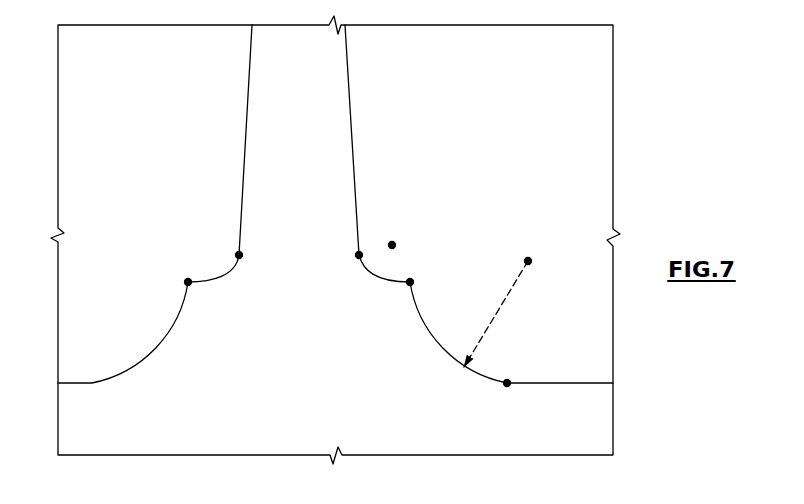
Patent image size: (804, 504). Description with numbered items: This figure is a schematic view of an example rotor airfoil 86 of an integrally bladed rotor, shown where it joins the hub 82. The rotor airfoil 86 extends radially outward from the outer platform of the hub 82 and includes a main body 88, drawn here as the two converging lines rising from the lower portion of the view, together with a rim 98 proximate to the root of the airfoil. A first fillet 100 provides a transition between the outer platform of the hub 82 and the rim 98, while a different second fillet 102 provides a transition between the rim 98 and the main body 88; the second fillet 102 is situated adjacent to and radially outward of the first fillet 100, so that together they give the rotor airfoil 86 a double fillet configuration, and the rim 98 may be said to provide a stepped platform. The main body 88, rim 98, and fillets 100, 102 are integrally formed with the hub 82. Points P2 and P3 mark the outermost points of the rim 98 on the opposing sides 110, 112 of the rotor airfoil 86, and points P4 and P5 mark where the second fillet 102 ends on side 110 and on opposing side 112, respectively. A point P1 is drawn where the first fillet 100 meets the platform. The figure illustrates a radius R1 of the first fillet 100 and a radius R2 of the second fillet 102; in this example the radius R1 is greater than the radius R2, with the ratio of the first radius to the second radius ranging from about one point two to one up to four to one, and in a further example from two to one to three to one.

The hub 82 is at (532, 435).
The rotor airfoil 86 is at (378, 75).
The main body 88 is at (335, 106).
The rim 98 is at (175, 279).
The first fillet 100 is at (428, 360).
The second fillet 102 is at (370, 280).
The side of the rotor airfoil 110 is at (457, 148).
The opposing side of the rotor airfoil 112 is at (176, 148).
The first point P1 is at (507, 383).
The point P2 is at (410, 282).
The point P3 is at (188, 282).
The point P4 is at (359, 255).
The point P5 is at (239, 255).
The radius of the first fillet R1 is at (510, 297).
The radius of the second fillet R2 is at (375, 268).